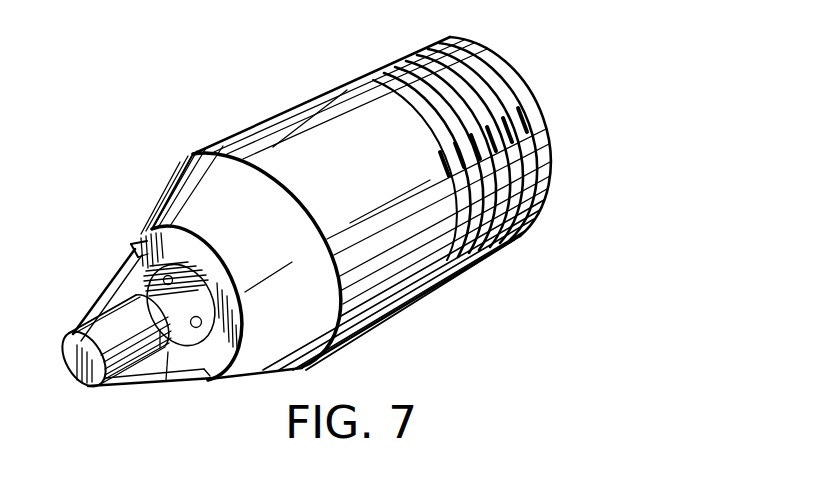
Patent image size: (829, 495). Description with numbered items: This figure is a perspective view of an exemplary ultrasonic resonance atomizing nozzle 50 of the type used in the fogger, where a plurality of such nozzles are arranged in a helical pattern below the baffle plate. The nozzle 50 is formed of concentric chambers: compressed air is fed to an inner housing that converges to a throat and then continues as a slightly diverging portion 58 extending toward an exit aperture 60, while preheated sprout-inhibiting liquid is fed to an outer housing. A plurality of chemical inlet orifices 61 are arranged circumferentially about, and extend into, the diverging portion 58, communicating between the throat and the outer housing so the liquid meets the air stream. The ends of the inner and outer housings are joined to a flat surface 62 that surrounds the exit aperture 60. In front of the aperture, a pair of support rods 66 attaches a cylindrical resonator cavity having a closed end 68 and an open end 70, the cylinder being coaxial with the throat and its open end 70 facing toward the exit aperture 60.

The nozzle 50 is at (503, 273).
The diverging portion 58 is at (162, 295).
The exit aperture 60 is at (181, 348).
The chemical inlet orifices 61 is at (149, 234).
The flat surface 62 is at (143, 243).
The support rods 66 is at (106, 286).
The closed end 68 is at (73, 354).
The open end 70 is at (169, 345).